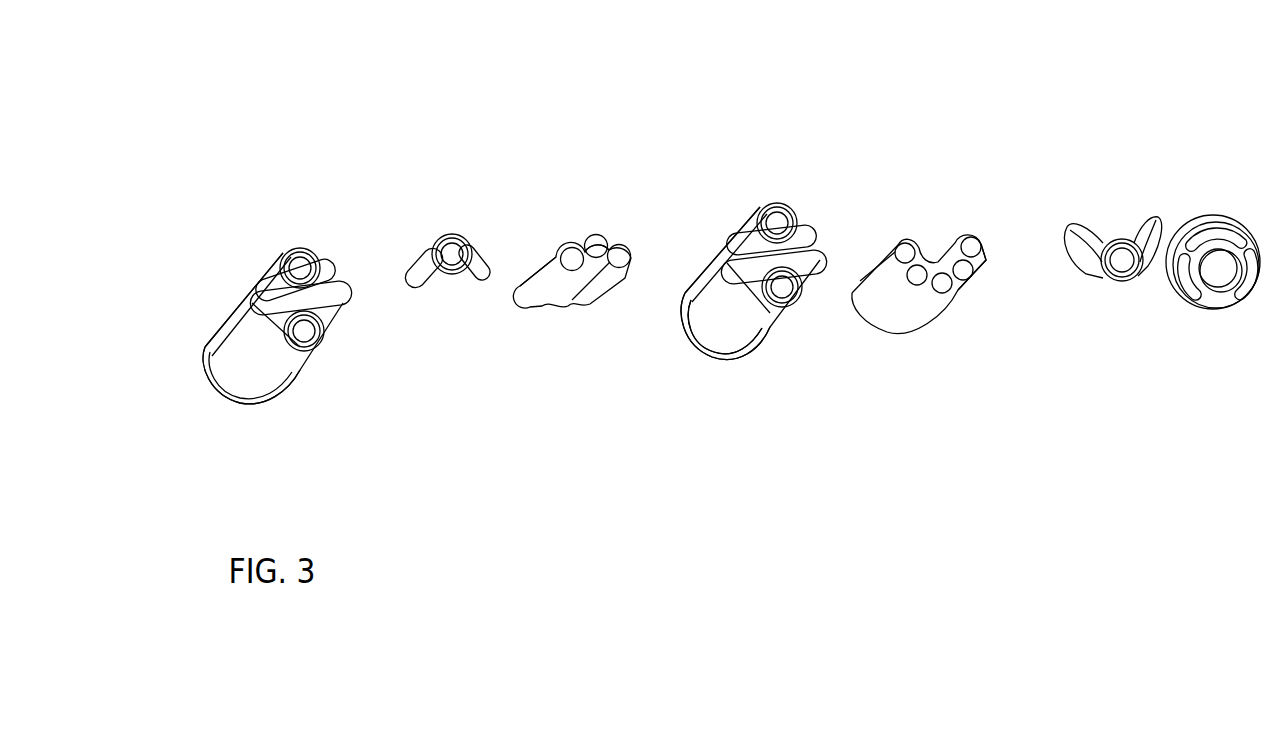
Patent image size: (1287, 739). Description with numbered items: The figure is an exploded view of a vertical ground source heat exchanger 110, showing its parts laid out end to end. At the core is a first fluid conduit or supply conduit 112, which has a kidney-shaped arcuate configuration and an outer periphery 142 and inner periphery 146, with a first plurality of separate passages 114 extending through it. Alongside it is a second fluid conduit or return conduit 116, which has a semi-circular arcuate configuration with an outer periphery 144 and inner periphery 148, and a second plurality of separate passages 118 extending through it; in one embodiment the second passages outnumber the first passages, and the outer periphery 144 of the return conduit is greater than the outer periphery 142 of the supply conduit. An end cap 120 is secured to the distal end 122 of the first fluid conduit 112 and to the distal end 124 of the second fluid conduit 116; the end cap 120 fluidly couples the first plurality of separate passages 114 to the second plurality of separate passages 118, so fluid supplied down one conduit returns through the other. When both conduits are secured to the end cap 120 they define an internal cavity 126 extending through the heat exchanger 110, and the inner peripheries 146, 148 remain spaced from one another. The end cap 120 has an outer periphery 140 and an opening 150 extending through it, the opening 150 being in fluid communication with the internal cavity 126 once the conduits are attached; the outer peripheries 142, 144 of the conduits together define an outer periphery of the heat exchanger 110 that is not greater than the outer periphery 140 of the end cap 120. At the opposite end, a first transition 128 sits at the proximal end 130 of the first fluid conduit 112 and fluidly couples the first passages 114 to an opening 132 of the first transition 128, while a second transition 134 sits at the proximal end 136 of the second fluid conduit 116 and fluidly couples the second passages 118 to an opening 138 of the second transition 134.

The ground source heat exchanger 110 is at (296, 142).
The first fluid conduit 112 is at (237, 298).
The first plurality of separate passages 114 is at (618, 256).
The second fluid conduit 116 is at (891, 142).
The second plurality of separate passages 118 is at (905, 252).
The end cap 120 is at (1213, 142).
The distal end of the first fluid conduit 122 is at (523, 308).
The distal end of the second fluid conduit 124 is at (862, 323).
The internal cavity 126 is at (775, 262).
The first transition 128 is at (450, 142).
The proximal end of the first fluid conduit 130 is at (627, 253).
The opening of the first transition 132 is at (452, 258).
The second transition 134 is at (1108, 142).
The proximal end of the second fluid conduit 136 is at (1003, 292).
The opening of the second transition 138 is at (1122, 265).
The outer periphery of the end cap 140 is at (1180, 250).
The outer periphery of the first fluid conduit 142 is at (545, 267).
The outer periphery of the second fluid conduit 144 is at (930, 312).
The inner periphery of the first fluid conduit 146 is at (593, 272).
The inner periphery of the second fluid conduit 148 is at (932, 270).
The opening of the end cap 150 is at (1217, 270).